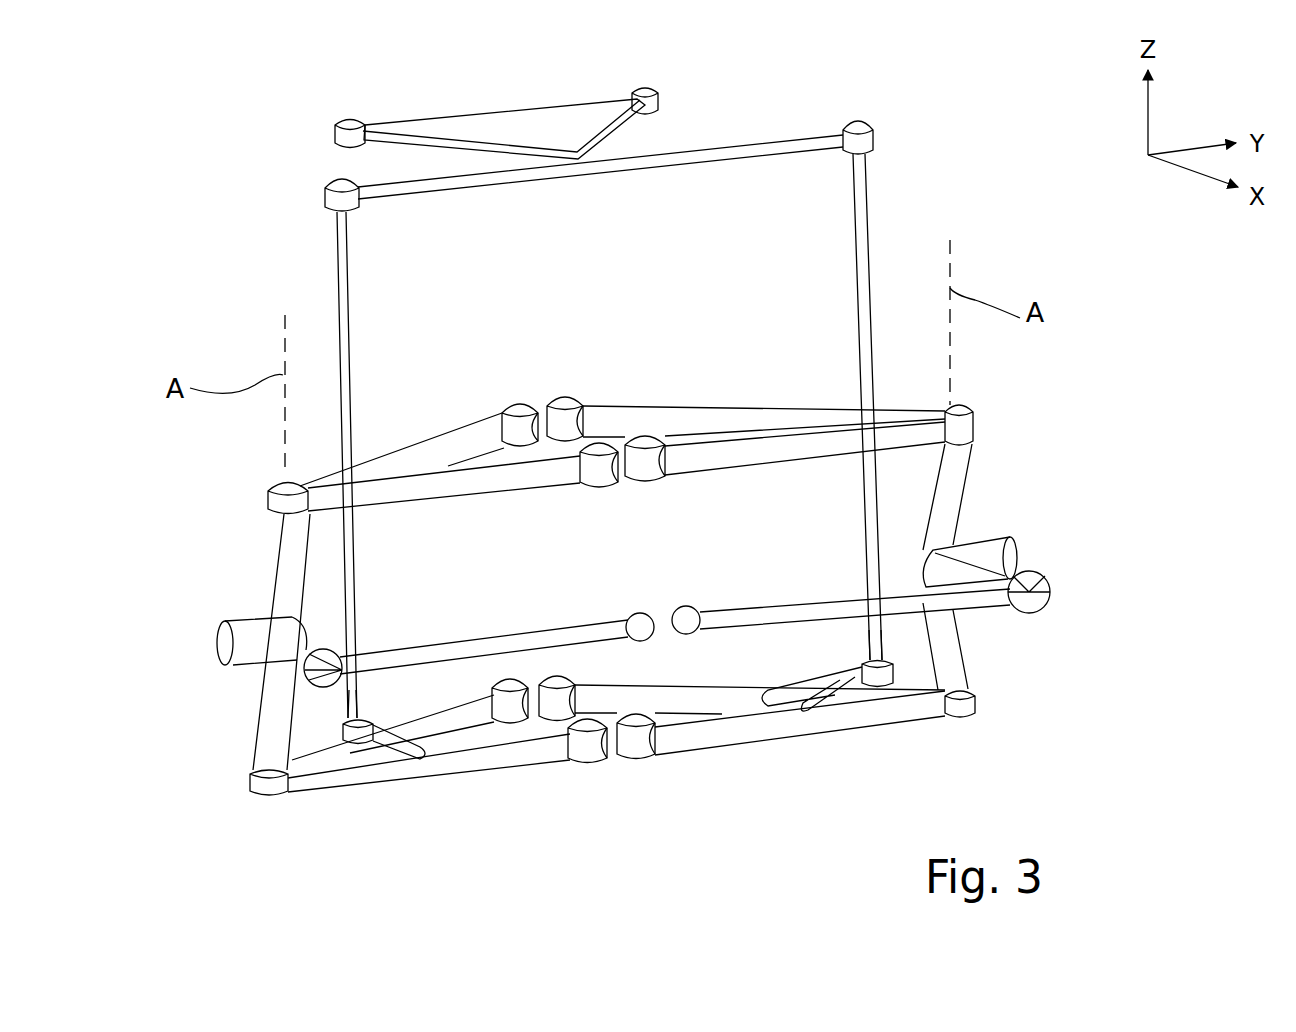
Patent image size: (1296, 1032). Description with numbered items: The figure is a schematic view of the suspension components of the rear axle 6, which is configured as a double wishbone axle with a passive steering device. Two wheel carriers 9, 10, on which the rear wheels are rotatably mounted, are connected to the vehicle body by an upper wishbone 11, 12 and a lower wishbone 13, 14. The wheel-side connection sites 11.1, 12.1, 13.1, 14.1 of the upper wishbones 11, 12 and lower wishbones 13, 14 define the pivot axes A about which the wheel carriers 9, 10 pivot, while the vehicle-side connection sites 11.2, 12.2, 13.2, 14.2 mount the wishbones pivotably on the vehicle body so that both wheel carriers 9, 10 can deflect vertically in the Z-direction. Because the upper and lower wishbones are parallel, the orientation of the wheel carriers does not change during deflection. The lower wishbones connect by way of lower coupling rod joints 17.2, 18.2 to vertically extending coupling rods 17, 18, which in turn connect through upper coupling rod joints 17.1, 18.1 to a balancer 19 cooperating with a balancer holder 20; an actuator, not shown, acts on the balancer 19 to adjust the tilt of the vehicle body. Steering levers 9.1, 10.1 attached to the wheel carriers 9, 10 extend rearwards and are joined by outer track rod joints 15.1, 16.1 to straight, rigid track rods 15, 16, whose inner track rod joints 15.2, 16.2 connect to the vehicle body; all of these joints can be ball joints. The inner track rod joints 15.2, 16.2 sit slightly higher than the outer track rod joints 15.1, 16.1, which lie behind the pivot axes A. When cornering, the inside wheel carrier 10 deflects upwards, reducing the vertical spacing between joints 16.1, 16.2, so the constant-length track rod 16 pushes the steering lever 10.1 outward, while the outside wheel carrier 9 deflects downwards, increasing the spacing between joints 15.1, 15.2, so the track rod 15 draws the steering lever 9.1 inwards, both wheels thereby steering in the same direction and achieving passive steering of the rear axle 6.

The rear axle 6 is at (955, 115).
The wheel carrier 9 is at (280, 700).
The steering lever 9.1 is at (307, 630).
The wheel carrier 10 is at (972, 458).
The steering lever 10.1 is at (996, 555).
The upper wishbone 11 is at (442, 486).
The wheel-side connection site 11.1 is at (266, 497).
The vehicle-side connection site 11.2 is at (519, 398).
The upper wishbone 12 is at (762, 405).
The wheel-side connection site 12.1 is at (980, 420).
The vehicle-side connection site 12.2 is at (573, 394).
The lower wishbone 13 is at (373, 768).
The wheel-side connection site 13.1 is at (245, 778).
The vehicle-side connection site 13.2 is at (510, 748).
The lower wishbone 14 is at (700, 652).
The wheel-side connection site 14.1 is at (984, 701).
The vehicle-side connection site 14.2 is at (556, 744).
The track rod 15 is at (455, 656).
The outer track rod joint 15.1 is at (325, 700).
The inner track rod joint 15.2 is at (654, 652).
The track rod 16 is at (862, 692).
The outer track rod joint 16.1 is at (1053, 600).
The inner track rod joint 16.2 is at (813, 624).
The coupling rod 17 is at (343, 268).
The upper coupling rod joint 17.1 is at (320, 194).
The lower coupling rod joint 17.2 is at (384, 710).
The coupling rod 18 is at (870, 182).
The upper coupling rod joint 18.1 is at (867, 118).
The lower coupling rod joint 18.2 is at (864, 648).
The balancer 19 is at (727, 148).
The balancer holder 20 is at (532, 130).